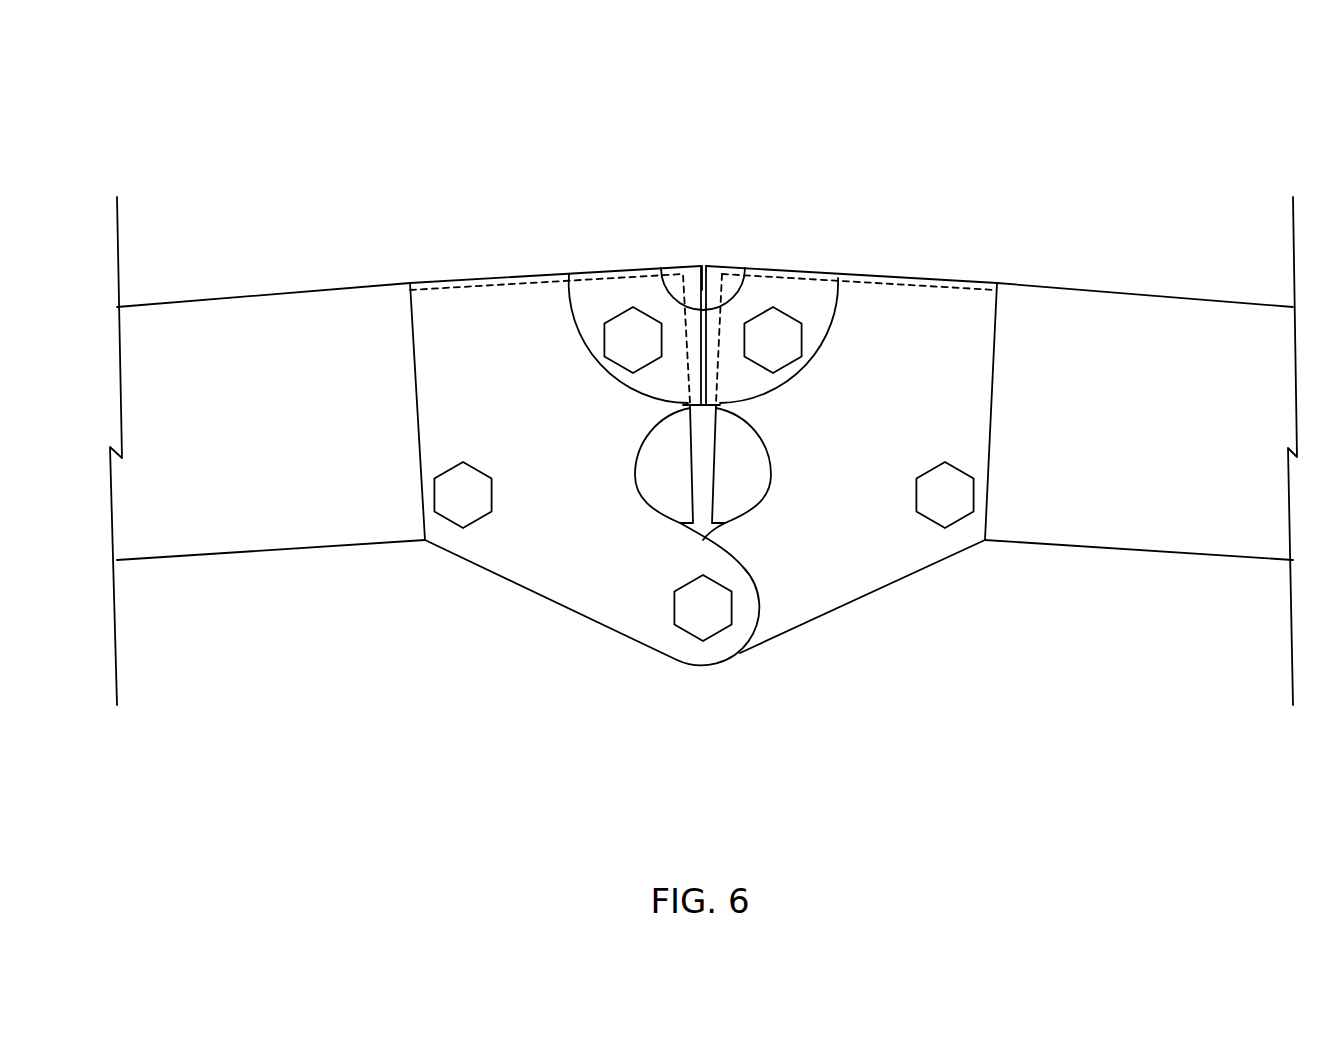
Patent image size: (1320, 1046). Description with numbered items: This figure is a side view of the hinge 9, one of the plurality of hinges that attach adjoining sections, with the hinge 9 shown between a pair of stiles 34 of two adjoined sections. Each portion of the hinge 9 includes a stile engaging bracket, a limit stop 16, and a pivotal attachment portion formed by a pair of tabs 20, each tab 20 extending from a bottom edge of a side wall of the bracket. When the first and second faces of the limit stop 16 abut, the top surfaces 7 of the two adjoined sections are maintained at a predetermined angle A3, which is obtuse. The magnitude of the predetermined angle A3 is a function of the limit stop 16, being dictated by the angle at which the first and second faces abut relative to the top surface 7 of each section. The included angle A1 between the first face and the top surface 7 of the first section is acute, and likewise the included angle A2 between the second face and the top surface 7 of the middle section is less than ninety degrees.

The first hinge 9 is at (703, 398).
The top surface 7 is at (500, 284).
The limit stop 16 is at (702, 266).
The predetermined angle A3 is at (712, 307).
The included angle A2 is at (573, 320).
The included angle A1 is at (833, 322).
The tab 20 is at (568, 570).
The stile 34 is at (273, 551).